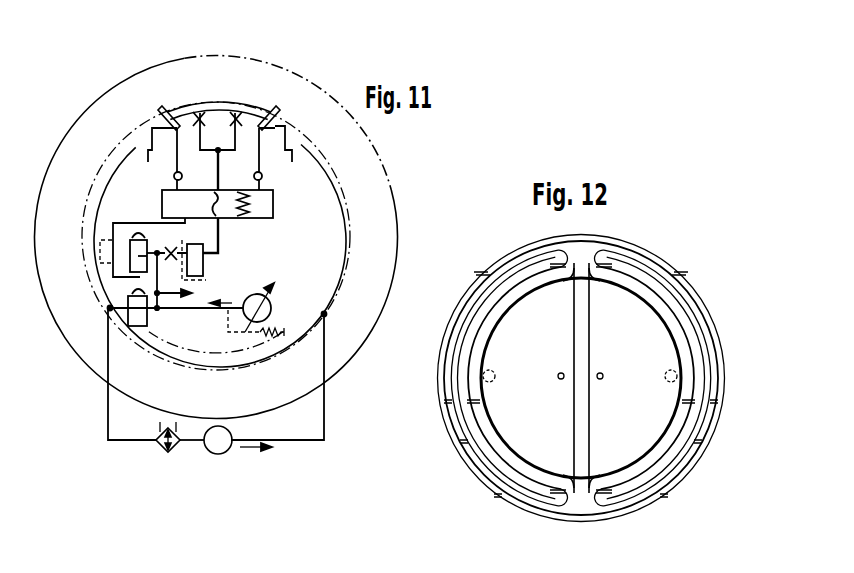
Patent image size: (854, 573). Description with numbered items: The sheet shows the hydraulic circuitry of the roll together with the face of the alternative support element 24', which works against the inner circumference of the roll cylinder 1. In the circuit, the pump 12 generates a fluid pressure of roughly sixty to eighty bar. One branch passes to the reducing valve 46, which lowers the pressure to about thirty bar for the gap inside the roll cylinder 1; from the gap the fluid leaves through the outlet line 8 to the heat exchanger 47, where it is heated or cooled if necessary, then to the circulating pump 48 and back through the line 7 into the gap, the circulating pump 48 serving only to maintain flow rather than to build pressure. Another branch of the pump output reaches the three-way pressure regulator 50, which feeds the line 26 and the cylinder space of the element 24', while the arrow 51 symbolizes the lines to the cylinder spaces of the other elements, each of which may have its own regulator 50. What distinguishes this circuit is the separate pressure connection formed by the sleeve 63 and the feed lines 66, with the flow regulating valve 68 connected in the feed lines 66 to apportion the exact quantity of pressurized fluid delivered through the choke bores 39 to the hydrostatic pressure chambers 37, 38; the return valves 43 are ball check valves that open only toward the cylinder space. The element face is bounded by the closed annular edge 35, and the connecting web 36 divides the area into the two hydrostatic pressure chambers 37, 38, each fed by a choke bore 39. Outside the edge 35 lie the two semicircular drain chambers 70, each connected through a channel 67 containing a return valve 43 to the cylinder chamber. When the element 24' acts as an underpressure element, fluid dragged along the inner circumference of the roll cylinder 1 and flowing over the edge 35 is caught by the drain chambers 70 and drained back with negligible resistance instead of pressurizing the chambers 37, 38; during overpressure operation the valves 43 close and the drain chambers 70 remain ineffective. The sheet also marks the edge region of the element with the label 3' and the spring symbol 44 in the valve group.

In FIG. 11, the roll cylinder 1 is at (322, 82).
In FIG. 11, the actuator housing 3' is at (216, 236).
In FIG. 11, the line 7 is at (326, 410).
In FIG. 11, the outlet line 8 is at (107, 410).
In FIG. 11, the pump 12 is at (275, 290).
In FIG. 11, the element 24' is at (247, 150).
In FIG. 11, the line 26 is at (120, 222).
In FIG. 12, the edge 35 is at (497, 308).
In FIG. 12, the connecting web 36 is at (591, 306).
In FIG. 11, the hydrostatic pressure chamber 37 is at (183, 100).
In FIG. 12, the hydrostatic pressure chamber 37 is at (537, 421).
In FIG. 11, the hydrostatic pressure chamber 38 is at (262, 100).
In FIG. 12, the hydrostatic pressure chamber 38 is at (641, 421).
In FIG. 11, the choke bore 39 is at (228, 104).
In FIG. 12, the choke bore 39 is at (561, 373).
In FIG. 11, the return valve 43 is at (173, 181).
In FIG. 11, the spring 44 is at (252, 204).
In FIG. 11, the reducing valve 46 is at (126, 306).
In FIG. 11, the heat exchanger 47 is at (166, 452).
In FIG. 11, the circulating pump 48 is at (218, 454).
In FIG. 11, the three-way pressure regulator 50 is at (128, 246).
In FIG. 11, the arrow 51 is at (193, 293).
In FIG. 11, the sleeve 63 is at (208, 204).
In FIG. 11, the feed line 66 is at (220, 236).
In FIG. 12, the channel 67 is at (490, 370).
In FIG. 11, the flow regulating valve 68 is at (205, 258).
In FIG. 11, the drain chamber 70 is at (162, 108).
In FIG. 12, the drain chamber 70 is at (494, 290).